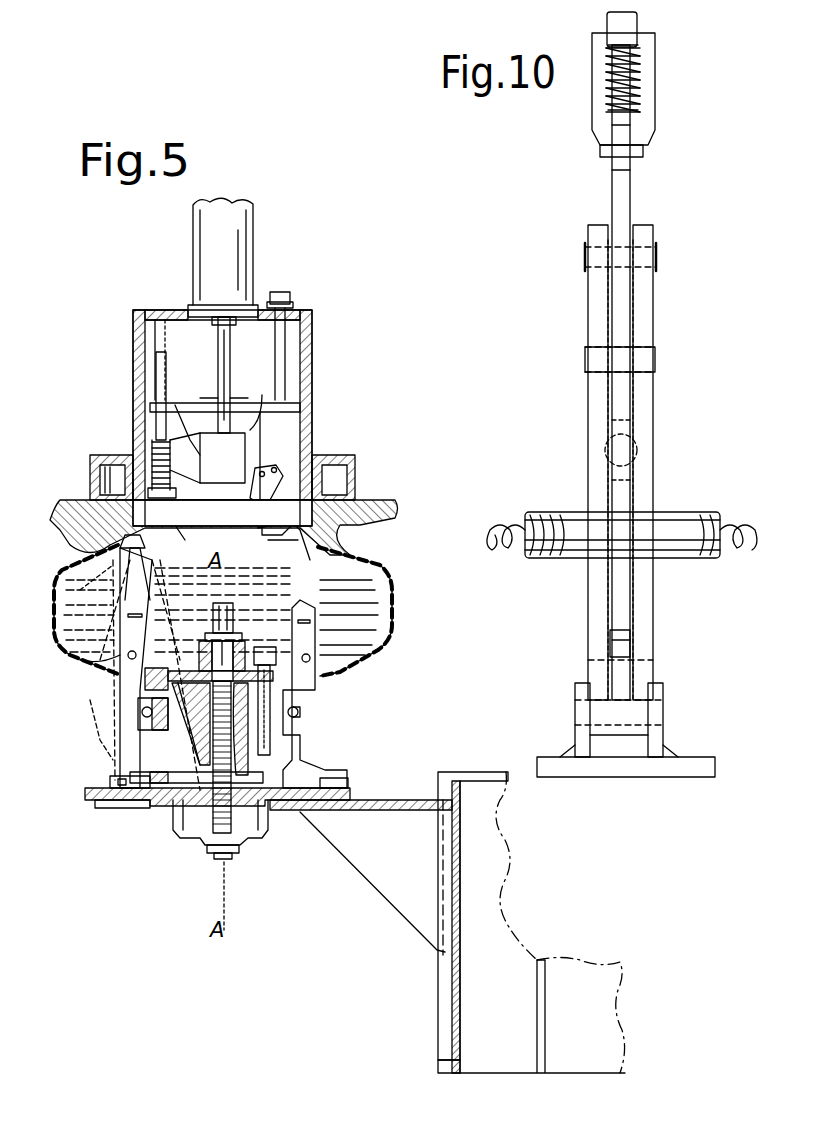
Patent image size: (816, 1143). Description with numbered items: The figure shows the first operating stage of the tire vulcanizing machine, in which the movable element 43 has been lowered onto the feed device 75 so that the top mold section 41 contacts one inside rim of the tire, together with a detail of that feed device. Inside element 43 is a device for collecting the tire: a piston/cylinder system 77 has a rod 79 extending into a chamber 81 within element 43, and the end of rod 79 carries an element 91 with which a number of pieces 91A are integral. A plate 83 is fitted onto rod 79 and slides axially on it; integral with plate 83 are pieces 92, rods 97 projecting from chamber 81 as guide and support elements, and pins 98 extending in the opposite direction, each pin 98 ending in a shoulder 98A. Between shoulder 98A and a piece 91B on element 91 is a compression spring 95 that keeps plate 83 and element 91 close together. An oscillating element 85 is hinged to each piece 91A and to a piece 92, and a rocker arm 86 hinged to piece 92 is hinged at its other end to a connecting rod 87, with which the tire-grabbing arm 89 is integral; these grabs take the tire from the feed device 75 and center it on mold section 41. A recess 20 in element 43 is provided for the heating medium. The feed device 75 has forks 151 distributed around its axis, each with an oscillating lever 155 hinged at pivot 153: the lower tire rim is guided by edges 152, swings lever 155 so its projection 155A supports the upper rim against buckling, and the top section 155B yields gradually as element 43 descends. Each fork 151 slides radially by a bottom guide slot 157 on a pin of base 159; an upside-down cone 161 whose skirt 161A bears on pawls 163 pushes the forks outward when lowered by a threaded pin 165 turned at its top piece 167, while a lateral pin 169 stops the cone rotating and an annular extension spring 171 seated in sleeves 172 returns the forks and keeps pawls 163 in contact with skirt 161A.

In FIG. 5, the piston/cylinder system 77 is at (197, 236).
In FIG. 5, the chamber 81 is at (165, 325).
In FIG. 5, the element 43 is at (325, 318).
In FIG. 5, the rods 97 is at (285, 372).
In FIG. 5, the rod 79 is at (230, 358).
In FIG. 5, the plate 83 is at (196, 402).
In FIG. 5, the piece 92 is at (285, 420).
In FIG. 5, the element 91 is at (207, 458).
In FIG. 5, the piece 91A is at (262, 445).
In FIG. 5, the piece 91B is at (176, 405).
In FIG. 5, the pin 98 is at (158, 362).
In FIG. 5, the shoulder 98A is at (150, 492).
In FIG. 5, the oscillating element 85 is at (292, 546).
In FIG. 5, the compression spring 95 is at (150, 530).
In FIG. 5, the connecting rod 87 is at (282, 540).
In FIG. 5, the recess 20 is at (348, 470).
In FIG. 5, the rocker arm 86 is at (330, 484).
In FIG. 5, the mold section 41 is at (365, 525).
In FIG. 5, the arm or end section 89 is at (345, 580).
In FIG. 5, the fork 151 is at (135, 752).
In FIG. 10, the fork 151 is at (660, 322).
In FIG. 5, the oscillating lever 155 is at (152, 592).
In FIG. 10, the oscillating lever 155 is at (590, 124).
In FIG. 5, the projection 155A is at (118, 580).
In FIG. 10, the projection 155A is at (630, 126).
In FIG. 5, the top section 155B is at (120, 540).
In FIG. 10, the top section 155B is at (640, 30).
In FIG. 5, the pivot point 153 is at (120, 658).
In FIG. 10, the pivot point 153 is at (655, 362).
In FIG. 5, the edge 152 is at (115, 722).
In FIG. 5, the top piece 167 is at (238, 608).
In FIG. 5, the bottom guide slot 157 is at (172, 795).
In FIG. 5, the pawl 163 is at (178, 790).
In FIG. 5, the threaded pin 165 is at (236, 790).
In FIG. 5, the cone 161 is at (244, 800).
In FIG. 5, the skirt 161A is at (252, 795).
In FIG. 5, the base 159 is at (100, 800).
In FIG. 10, the base 159 is at (688, 760).
In FIG. 5, the lateral pin 169 is at (272, 692).
In FIG. 5, the annular helical extension spring 171 is at (300, 712).
In FIG. 10, the annular helical extension spring 171 is at (508, 520).
In FIG. 5, the sleeve 172 is at (300, 698).
In FIG. 10, the sleeve 172 is at (676, 524).
In FIG. 5, the feed device 75 is at (335, 740).